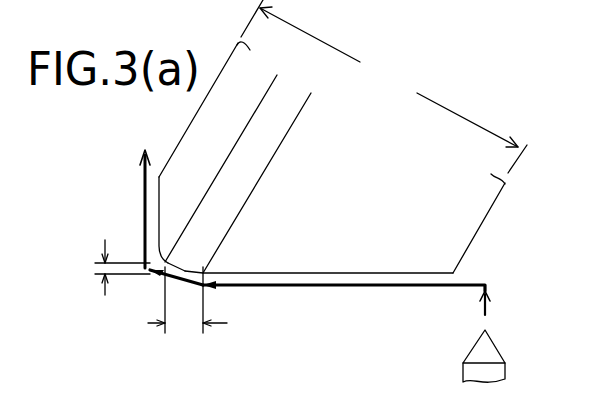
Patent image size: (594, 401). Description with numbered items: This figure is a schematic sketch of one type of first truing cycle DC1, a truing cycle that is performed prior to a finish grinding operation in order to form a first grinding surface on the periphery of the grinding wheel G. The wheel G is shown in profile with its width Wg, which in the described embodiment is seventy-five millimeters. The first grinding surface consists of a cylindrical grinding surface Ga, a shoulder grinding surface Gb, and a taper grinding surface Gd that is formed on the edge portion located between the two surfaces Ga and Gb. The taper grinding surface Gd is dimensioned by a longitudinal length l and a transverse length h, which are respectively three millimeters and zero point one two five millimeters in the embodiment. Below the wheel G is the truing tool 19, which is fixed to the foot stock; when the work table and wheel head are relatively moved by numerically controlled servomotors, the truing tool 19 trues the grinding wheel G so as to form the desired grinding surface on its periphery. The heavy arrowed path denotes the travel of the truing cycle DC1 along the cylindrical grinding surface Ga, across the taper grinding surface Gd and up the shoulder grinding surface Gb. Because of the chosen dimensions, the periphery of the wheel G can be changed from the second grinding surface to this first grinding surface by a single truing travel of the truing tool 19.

The grinding wheel G is at (465, 228).
The cylindrical grinding surface Ga is at (358, 273).
The shoulder grinding surface Gb is at (157, 205).
The taper grinding surface Gd is at (181, 279).
The first truing cycle DC1 is at (405, 287).
The truing tool 19 is at (495, 353).
The transverse length h is at (122, 281).
The longitudinal length l is at (194, 303).
The width Wg is at (384, 86).